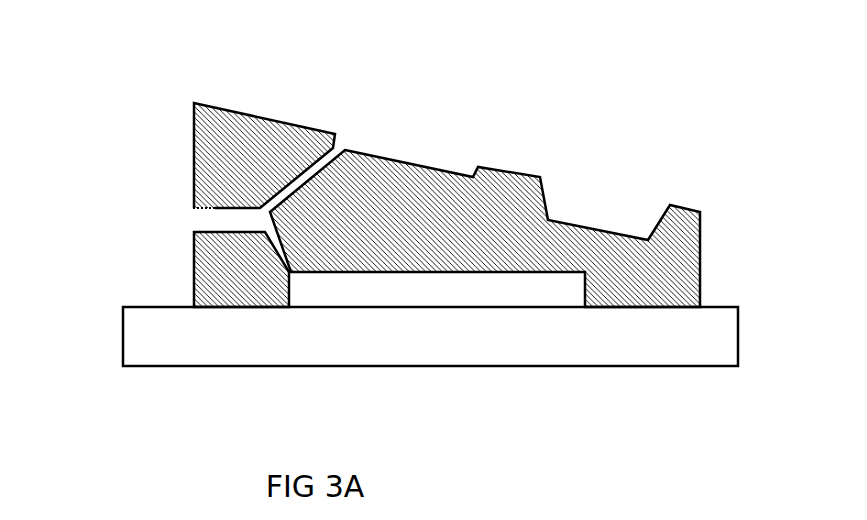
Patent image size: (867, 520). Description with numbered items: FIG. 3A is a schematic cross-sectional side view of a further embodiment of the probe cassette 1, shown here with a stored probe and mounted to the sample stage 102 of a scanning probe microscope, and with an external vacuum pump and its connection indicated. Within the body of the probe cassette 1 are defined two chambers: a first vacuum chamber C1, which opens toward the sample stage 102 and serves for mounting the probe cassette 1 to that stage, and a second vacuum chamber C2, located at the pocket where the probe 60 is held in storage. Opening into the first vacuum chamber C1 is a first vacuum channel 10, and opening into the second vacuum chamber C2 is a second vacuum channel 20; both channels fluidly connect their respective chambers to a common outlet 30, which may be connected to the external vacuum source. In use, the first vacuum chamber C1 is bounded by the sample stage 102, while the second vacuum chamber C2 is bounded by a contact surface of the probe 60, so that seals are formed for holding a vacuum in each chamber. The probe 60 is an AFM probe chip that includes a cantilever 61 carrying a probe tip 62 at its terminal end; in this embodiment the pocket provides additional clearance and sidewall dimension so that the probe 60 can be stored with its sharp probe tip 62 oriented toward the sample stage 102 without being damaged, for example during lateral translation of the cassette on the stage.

The probe cassette 1 is at (102, 74).
The first vacuum channel 10 is at (272, 251).
The second vacuum channel 20 is at (290, 180).
The outlet 30 is at (209, 222).
The probe 60 is at (268, 104).
The cantilever 61 is at (640, 187).
The probe tip 62 is at (635, 212).
The first vacuum chamber C1 is at (556, 292).
The second vacuum chamber C2 is at (468, 167).
The sample stage 102 is at (161, 373).